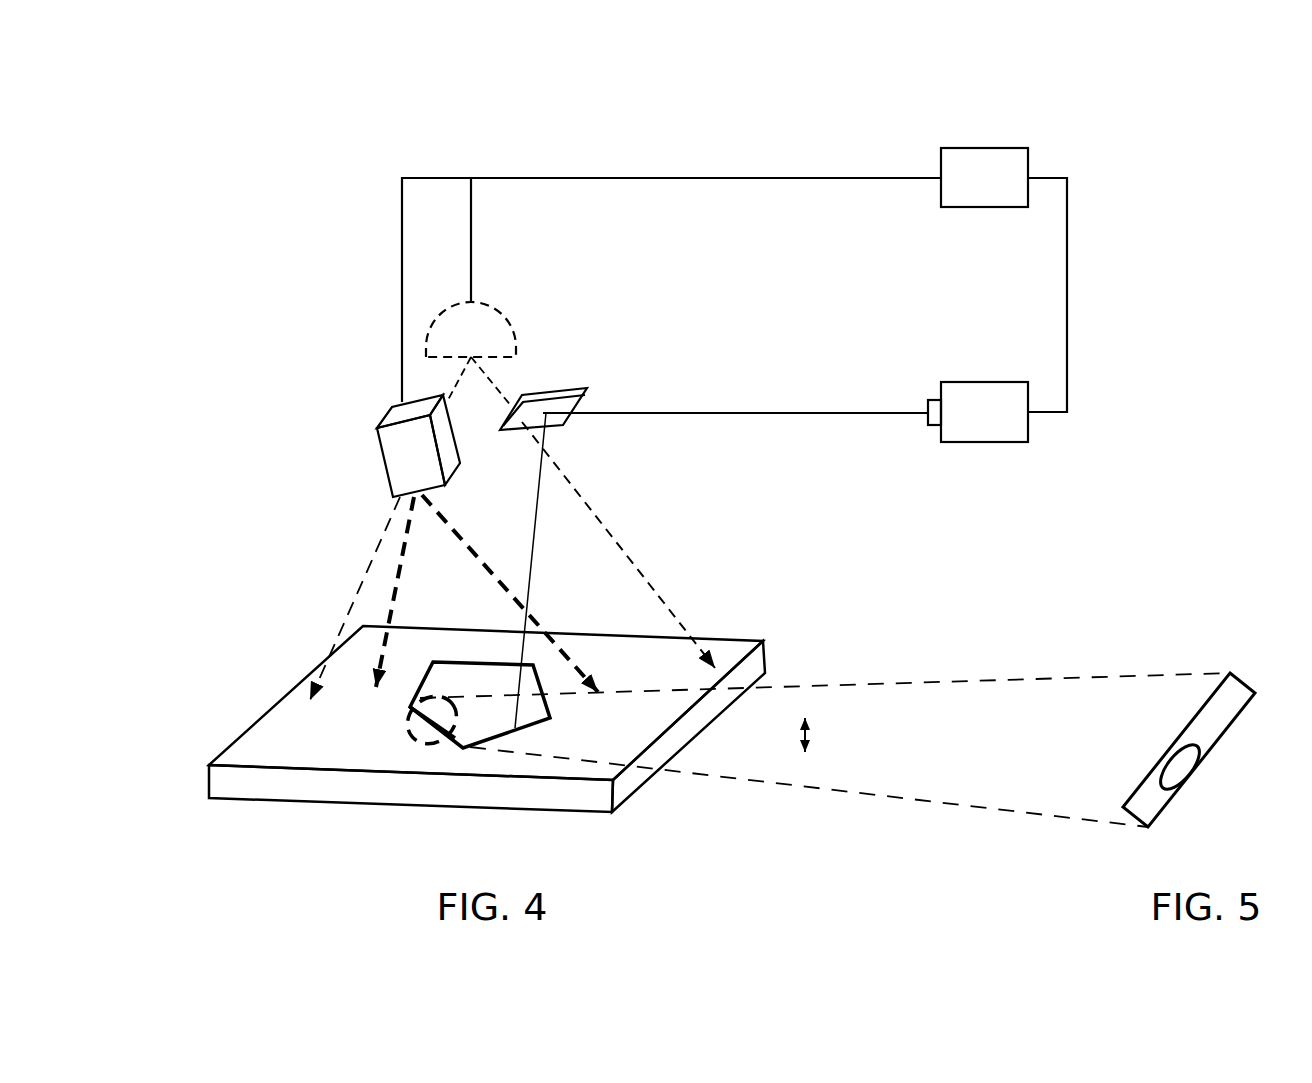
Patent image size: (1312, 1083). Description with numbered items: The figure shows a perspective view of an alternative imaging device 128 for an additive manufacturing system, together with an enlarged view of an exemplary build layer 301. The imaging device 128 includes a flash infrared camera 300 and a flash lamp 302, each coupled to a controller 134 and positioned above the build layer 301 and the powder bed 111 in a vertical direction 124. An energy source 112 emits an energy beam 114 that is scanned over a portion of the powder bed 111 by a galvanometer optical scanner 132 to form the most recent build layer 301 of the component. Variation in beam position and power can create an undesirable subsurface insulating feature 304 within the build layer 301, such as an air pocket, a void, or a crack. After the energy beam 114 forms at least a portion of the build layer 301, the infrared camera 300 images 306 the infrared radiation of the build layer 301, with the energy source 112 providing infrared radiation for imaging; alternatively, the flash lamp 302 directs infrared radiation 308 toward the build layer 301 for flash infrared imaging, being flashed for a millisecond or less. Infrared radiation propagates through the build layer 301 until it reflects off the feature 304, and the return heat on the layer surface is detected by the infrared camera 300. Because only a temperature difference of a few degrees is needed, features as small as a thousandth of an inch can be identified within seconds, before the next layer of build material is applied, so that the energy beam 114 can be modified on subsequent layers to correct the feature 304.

In FIG. 4, the imaging device 128 is at (317, 173).
In FIG. 4, the controller 134 is at (962, 193).
In FIG. 4, the energy source 112 is at (962, 427).
In FIG. 4, the energy beam 114 is at (762, 414).
In FIG. 4, the flash lamp 302 is at (425, 333).
In FIG. 4, the galvanometer optical scanner 132 is at (573, 387).
In FIG. 4, the flash infrared camera 300 is at (378, 463).
In FIG. 4, the images 306 is at (468, 543).
In FIG. 4, the infrared radiation 308 is at (630, 555).
In FIG. 4, the powder bed 111 is at (638, 777).
In FIG. 4, the build layer 301 is at (490, 743).
In FIG. 5, the build layer 301 is at (1187, 720).
In FIG. 4, the vertical direction 124 is at (810, 733).
In FIG. 5, the subsurface insulating feature 304 is at (1199, 774).